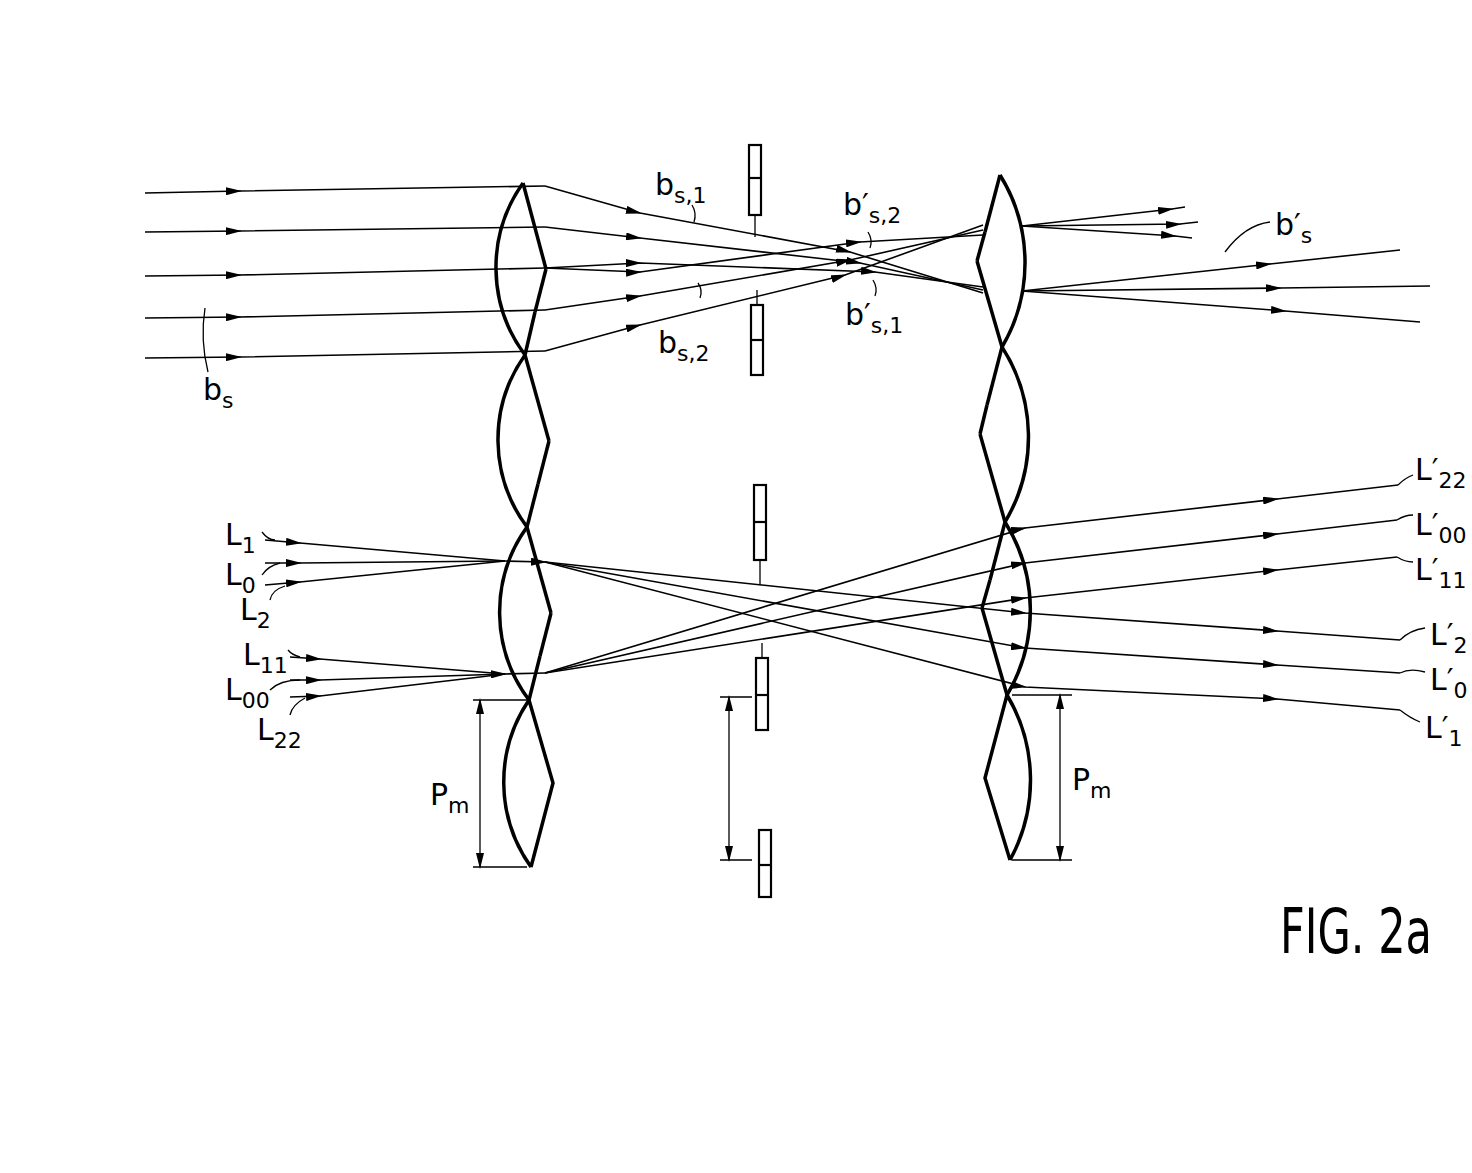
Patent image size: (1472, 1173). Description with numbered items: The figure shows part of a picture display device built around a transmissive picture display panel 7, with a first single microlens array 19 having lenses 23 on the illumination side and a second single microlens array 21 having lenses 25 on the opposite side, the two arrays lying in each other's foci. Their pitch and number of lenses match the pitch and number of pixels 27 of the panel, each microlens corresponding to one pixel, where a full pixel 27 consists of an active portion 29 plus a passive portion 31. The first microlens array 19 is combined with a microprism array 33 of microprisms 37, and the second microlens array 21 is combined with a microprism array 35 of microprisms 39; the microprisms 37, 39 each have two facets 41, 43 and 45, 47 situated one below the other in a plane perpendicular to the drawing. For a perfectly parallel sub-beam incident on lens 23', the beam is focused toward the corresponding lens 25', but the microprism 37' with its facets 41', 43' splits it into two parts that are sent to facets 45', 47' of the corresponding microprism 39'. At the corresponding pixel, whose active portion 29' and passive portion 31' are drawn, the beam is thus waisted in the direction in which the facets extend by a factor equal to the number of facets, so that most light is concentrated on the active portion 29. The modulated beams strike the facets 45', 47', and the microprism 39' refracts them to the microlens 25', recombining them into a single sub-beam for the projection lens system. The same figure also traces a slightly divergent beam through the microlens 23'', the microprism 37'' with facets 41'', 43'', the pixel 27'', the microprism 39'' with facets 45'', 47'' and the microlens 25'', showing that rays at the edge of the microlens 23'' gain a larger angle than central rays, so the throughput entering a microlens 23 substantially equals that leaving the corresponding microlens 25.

The picture display panel 7 is at (752, 897).
The first microlens array 19 is at (438, 845).
The second microlens array 21 is at (1085, 845).
The lens of first microlens array 23 is at (525, 444).
The lens of first microlens array 23' is at (548, 267).
The microlens of first array 23'' is at (536, 607).
The lens of second microlens array 25 is at (1007, 434).
The lens of second microlens array 25' is at (996, 252).
The microlens of second array 25'' is at (972, 590).
The pixel 27 is at (800, 466).
The pixel 27'' is at (811, 616).
The active portion 29 is at (755, 778).
The active portion 29' is at (791, 247).
The passive portion 31 is at (803, 777).
The passive portion 31' is at (788, 178).
The microprism array 33 is at (560, 845).
The second microprism array 35 is at (985, 845).
The microprism 37 is at (573, 467).
The microprism 37' is at (568, 337).
The microprism 37'' is at (575, 681).
The microprism 39 is at (953, 428).
The microprism 39' is at (959, 224).
The microprism 39'' is at (951, 559).
The facet 41 is at (568, 509).
The facet 41' is at (585, 342).
The facet 41'' is at (580, 635).
The facet 43 is at (567, 406).
The facet 43' is at (554, 199).
The facet 43'' is at (574, 575).
The facet 45 is at (972, 478).
The facet 45' is at (972, 314).
The facet 45'' is at (961, 663).
The facet 47 is at (965, 377).
The facet 47' is at (973, 184).
The facet 47'' is at (925, 551).